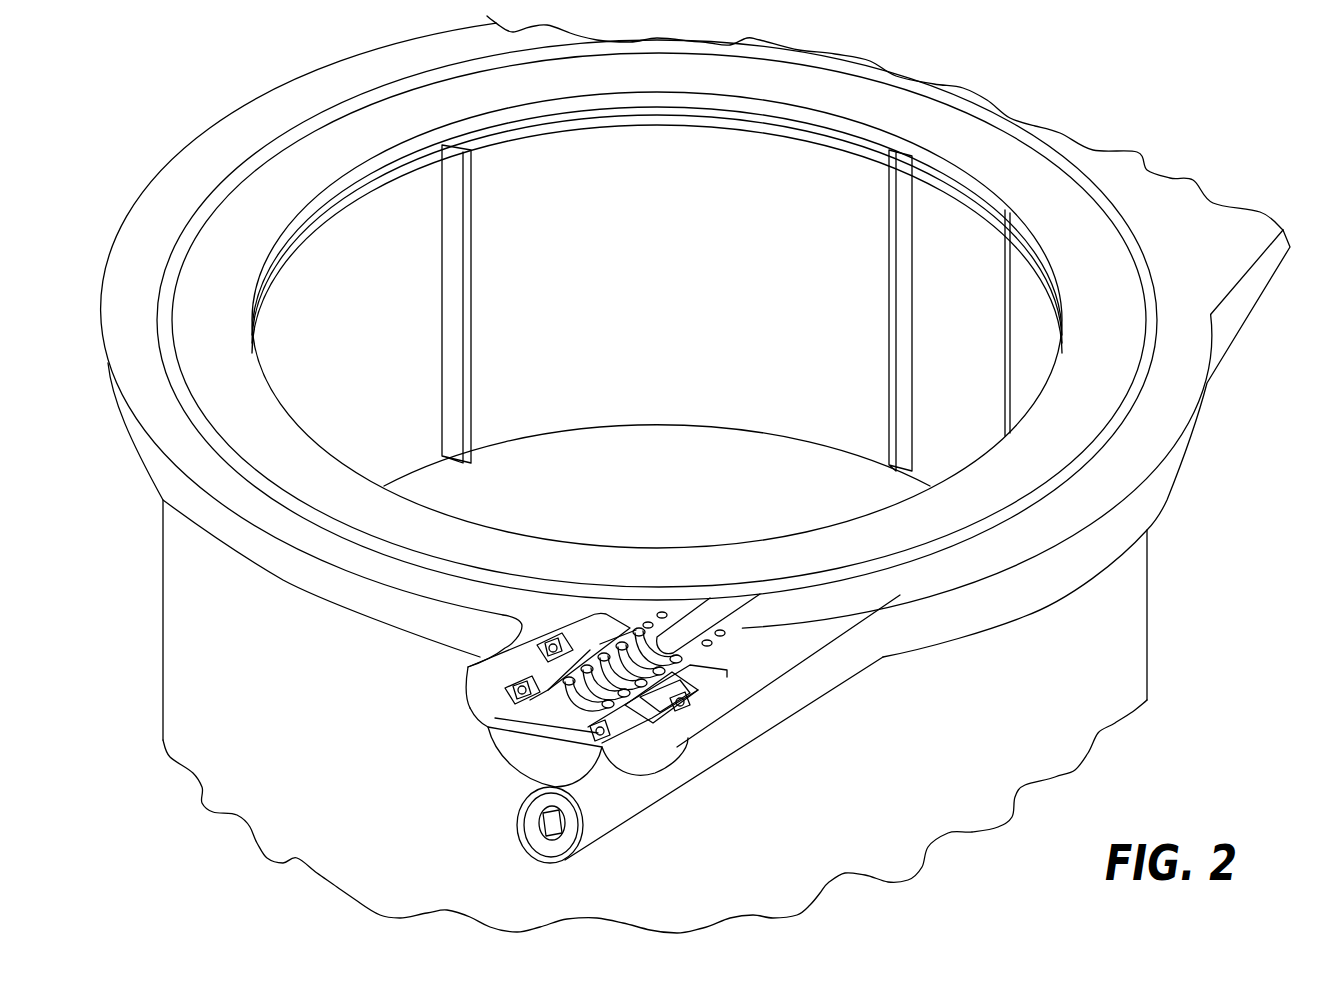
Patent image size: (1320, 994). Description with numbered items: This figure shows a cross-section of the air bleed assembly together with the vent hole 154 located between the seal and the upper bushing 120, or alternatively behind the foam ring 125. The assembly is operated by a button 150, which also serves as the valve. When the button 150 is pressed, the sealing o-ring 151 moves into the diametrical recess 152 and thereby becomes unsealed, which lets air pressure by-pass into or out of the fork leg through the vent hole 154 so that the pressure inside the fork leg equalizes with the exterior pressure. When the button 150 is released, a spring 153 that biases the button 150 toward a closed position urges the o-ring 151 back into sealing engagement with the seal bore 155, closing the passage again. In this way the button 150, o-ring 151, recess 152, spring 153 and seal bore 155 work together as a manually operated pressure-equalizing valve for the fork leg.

The upper bushing 120 is at (719, 404).
The foam ring 125 is at (284, 183).
The button 150 is at (484, 727).
The sealing o-ring 151 is at (605, 735).
The diametrical recess 152 is at (617, 737).
The spring 153 is at (633, 620).
The vent hole 154 is at (697, 620).
The seal bore 155 is at (467, 668).